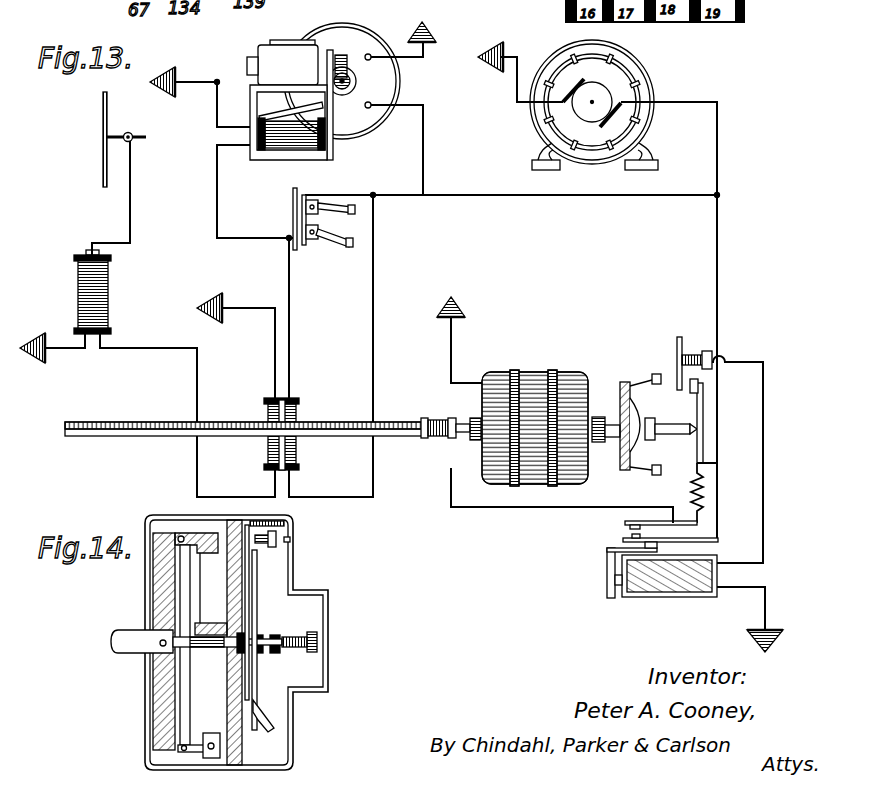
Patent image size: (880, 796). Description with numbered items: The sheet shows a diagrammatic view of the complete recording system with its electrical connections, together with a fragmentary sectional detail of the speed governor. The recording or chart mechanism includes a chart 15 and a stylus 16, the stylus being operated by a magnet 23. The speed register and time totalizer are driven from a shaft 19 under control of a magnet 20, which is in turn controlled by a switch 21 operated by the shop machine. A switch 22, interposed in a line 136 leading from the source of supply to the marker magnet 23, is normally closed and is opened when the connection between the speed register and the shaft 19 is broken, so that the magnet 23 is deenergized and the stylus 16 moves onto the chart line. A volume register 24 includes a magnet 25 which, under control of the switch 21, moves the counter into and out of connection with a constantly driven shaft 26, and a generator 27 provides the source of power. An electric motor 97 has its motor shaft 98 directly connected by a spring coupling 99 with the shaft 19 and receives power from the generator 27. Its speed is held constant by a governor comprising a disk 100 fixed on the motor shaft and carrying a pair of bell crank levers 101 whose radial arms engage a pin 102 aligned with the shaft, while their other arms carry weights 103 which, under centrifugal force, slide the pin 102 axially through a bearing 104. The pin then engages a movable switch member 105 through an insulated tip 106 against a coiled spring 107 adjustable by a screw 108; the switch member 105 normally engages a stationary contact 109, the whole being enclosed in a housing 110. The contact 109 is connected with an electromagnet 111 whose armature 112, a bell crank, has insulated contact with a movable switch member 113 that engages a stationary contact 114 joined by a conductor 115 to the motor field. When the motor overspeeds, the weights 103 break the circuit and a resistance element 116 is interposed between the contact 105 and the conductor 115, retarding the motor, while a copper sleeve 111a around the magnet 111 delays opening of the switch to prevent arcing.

In FIG. 13, the chart 15 is at (104, 162).
In FIG. 13, the stylus 16 is at (111, 137).
In FIG. 13, the shaft 19 is at (342, 423).
In FIG. 13, the magnet 20 is at (297, 451).
In FIG. 13, the switch 21 is at (318, 249).
In FIG. 13, the switch 22 is at (298, 410).
In FIG. 13, the magnet 23 is at (110, 287).
In FIG. 13, the volume register 24 is at (297, 41).
In FIG. 13, the magnet 25 is at (279, 151).
In FIG. 13, the constantly driven shaft 26 is at (355, 95).
In FIG. 13, the generator 27 is at (655, 86).
In FIG. 13, the electric motor 97 is at (538, 373).
In FIG. 13, the motor shaft 98 is at (463, 432).
In FIG. 13, the spring coupling 99 is at (438, 418).
In FIG. 13, the disk 100 is at (638, 405).
In FIG. 14, the disk 100 is at (153, 579).
In FIG. 13, the bell crank levers 101 is at (634, 382).
In FIG. 14, the bell crank levers 101 is at (180, 593).
In FIG. 14, the pin 102 is at (186, 655).
In FIG. 13, the weights 103 is at (662, 372).
In FIG. 14, the weights 103 is at (200, 530).
In FIG. 14, the bearing 104 is at (212, 623).
In FIG. 13, the movable switch member 105 is at (703, 402).
In FIG. 14, the movable switch member 105 is at (258, 580).
In FIG. 13, the insulated tip 106 is at (689, 435).
In FIG. 14, the insulated tip 106 is at (231, 662).
In FIG. 14, the coiled spring 107 is at (270, 640).
In FIG. 14, the screw 108 is at (318, 630).
In FIG. 13, the stationary contact 109 is at (682, 345).
In FIG. 14, the stationary contact 109 is at (250, 563).
In FIG. 14, the housing 110 is at (294, 725).
In FIG. 13, the electromagnet 111 is at (645, 580).
In FIG. 13, the copper sleeve 111a is at (717, 590).
In FIG. 13, the armature 112 is at (607, 562).
In FIG. 13, the movable switch member 113 is at (623, 540).
In FIG. 13, the stationary contact 114 is at (625, 524).
In FIG. 13, the conductor 115 is at (541, 508).
In FIG. 13, the resistance element 116 is at (692, 495).
In FIG. 13, the line 136 is at (333, 497).